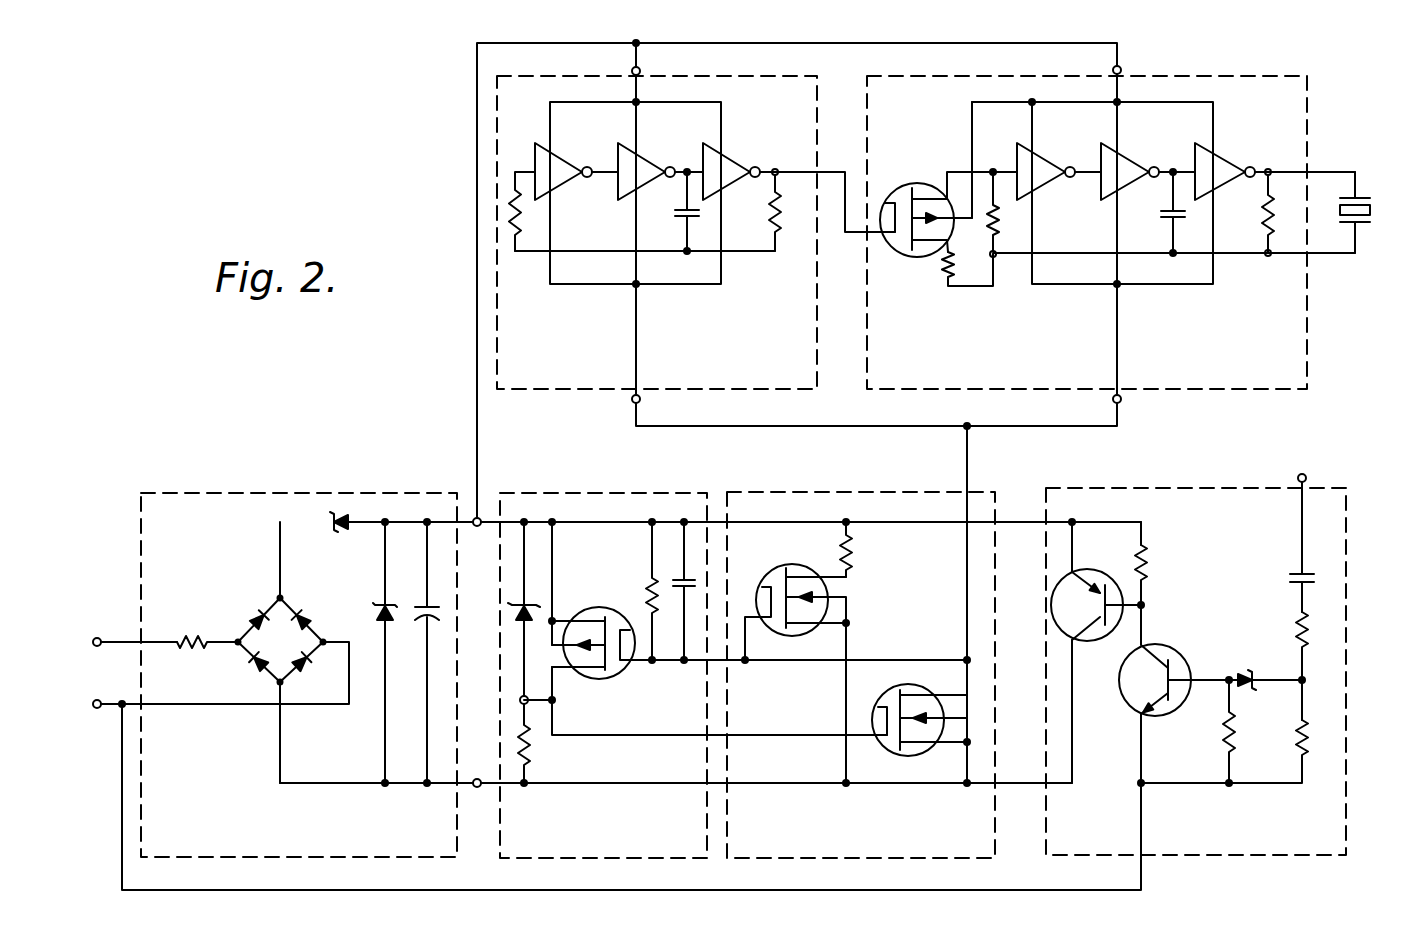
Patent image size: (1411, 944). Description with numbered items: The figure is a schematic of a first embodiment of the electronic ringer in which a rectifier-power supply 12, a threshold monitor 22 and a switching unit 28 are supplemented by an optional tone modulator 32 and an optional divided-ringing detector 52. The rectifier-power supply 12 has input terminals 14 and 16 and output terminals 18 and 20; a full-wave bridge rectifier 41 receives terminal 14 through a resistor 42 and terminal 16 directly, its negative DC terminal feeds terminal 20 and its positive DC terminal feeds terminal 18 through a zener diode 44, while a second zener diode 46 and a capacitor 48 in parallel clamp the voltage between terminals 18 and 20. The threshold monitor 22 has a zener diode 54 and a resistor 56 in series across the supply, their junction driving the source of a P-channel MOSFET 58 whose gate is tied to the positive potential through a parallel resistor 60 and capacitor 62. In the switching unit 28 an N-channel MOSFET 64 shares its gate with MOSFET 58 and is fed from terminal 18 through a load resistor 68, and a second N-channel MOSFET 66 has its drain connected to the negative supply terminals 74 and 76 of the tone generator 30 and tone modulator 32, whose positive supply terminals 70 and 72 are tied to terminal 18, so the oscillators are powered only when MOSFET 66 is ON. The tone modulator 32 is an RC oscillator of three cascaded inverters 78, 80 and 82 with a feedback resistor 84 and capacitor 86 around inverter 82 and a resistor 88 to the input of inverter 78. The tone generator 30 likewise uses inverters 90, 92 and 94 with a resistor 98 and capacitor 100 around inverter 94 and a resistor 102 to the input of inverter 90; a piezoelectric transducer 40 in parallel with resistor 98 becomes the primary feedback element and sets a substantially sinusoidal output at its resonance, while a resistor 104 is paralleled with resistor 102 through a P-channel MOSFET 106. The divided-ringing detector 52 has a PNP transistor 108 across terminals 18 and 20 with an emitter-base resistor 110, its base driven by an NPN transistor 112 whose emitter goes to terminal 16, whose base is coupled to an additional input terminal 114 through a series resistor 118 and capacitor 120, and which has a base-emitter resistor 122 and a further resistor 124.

The rectifier-power supply circuit 12 is at (299, 675).
The input terminal 14 is at (97, 637).
The input terminal 16 is at (96, 709).
The output terminal 18 is at (477, 527).
The output terminal 20 is at (477, 788).
The threshold monitor circuit 22 is at (603, 675).
The switching unit 28 is at (861, 675).
The tone generator circuit 30 is at (1087, 232).
The tone modulator unit 32 is at (657, 232).
The piezoelectric electroacoustic transducer 40 is at (1362, 235).
The full-wave semiconductor bridge rectifier 41 is at (281, 640).
The resistor 42 is at (190, 636).
The zener diode 44 is at (337, 538).
The second zener diode 46 is at (373, 607).
The capacitor 48 is at (421, 607).
The divided-ringing detector 52 is at (1196, 671).
The zener diode 54 is at (530, 620).
The resistor 56 is at (528, 750).
The P-channel enhancement mode MOSFET 58 is at (608, 678).
The resistor 60 is at (648, 596).
The capacitor 62 is at (682, 576).
The N-channel enhancement mode MOSFET 64 is at (796, 564).
The second N-channel enhancement mode MOSFET 66 is at (888, 690).
The resistor 68 is at (852, 548).
The positive supply terminal 70 is at (1122, 69).
The positive supply terminal 72 is at (641, 70).
The negative supply voltage terminal 74 is at (1122, 400).
The negative supply voltage terminal 76 is at (641, 400).
The inverter 78 is at (560, 162).
The inverter 80 is at (645, 162).
The inverter 82 is at (730, 162).
The resistor 84 is at (778, 212).
The capacitor 86 is at (683, 226).
The resistor 88 is at (517, 232).
The inverter circuit 90 is at (1040, 162).
The inverter circuit 92 is at (1130, 162).
The inverter circuit 94 is at (1228, 162).
The resistor 98 is at (1264, 228).
The capacitor 100 is at (1168, 226).
The resistor 102 is at (996, 232).
The resistor 104 is at (945, 280).
The P channel MOSFET 106 is at (917, 183).
The PNP transistor 108 is at (1093, 642).
The resistor 110 is at (1147, 560).
The NPN transistor 112 is at (1160, 645).
The additional input terminal 114 is at (1307, 477).
The resistor 118 is at (1296, 630).
The capacitor 120 is at (1290, 578).
The resistor 122 is at (1225, 732).
The resistor 124 is at (1298, 740).